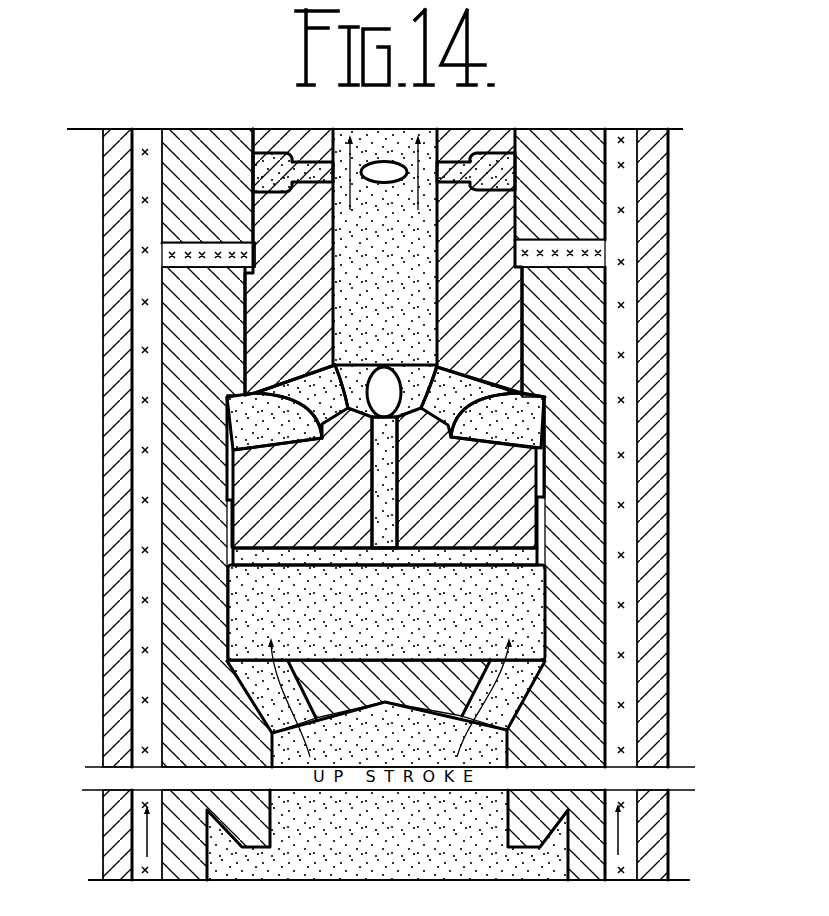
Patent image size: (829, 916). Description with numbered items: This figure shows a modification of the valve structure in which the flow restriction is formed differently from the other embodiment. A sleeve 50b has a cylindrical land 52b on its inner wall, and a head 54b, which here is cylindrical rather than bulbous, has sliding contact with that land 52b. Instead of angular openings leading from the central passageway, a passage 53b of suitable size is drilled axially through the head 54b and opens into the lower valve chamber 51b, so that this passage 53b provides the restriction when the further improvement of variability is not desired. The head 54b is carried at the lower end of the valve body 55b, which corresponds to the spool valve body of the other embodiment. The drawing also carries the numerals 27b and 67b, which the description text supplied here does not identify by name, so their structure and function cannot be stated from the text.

The tubing wall 27b is at (124, 292).
The packing 67b is at (605, 266).
The plunger 55b is at (524, 332).
The head 54b is at (540, 468).
The passage 53b is at (390, 488).
The cylindrical land 52b is at (540, 568).
The lower valve chamber 51b is at (516, 617).
The sleeve 50b is at (605, 668).